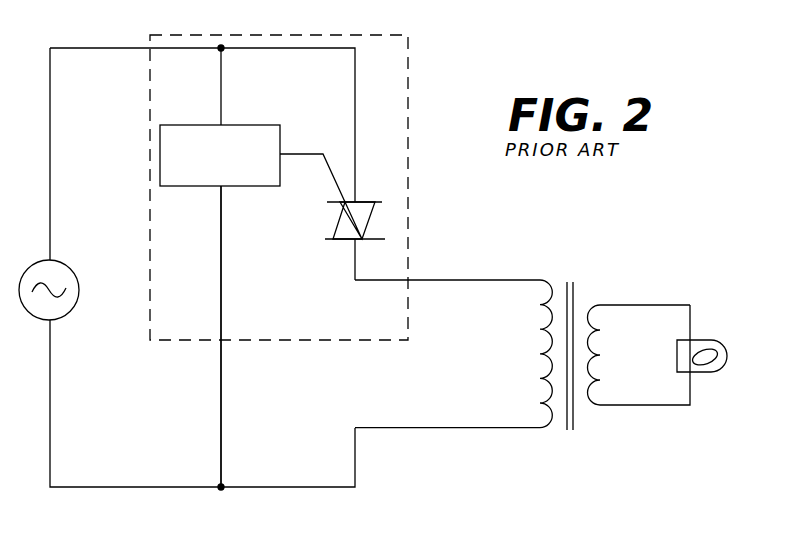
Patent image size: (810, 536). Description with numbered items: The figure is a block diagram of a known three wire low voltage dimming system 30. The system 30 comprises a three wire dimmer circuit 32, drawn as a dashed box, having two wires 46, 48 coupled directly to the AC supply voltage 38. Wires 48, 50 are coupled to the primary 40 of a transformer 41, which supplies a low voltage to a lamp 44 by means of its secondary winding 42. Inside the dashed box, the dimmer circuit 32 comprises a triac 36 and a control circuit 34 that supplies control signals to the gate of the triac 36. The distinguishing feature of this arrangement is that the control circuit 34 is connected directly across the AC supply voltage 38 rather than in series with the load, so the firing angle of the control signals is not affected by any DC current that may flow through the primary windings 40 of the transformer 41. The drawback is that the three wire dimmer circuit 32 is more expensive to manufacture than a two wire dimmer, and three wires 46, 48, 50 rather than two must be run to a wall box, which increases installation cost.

The three wire low voltage dimming system 30 is at (522, 343).
The three wire dimmer circuit 32 is at (398, 118).
The control circuit 34 is at (160, 157).
The triac 36 is at (378, 215).
The AC supply voltage 38 is at (79, 296).
The primary 40 is at (533, 283).
The transformer 41 is at (572, 437).
The secondary winding 42 is at (593, 305).
The lamp 44 is at (712, 345).
The wire 46 is at (118, 48).
The wire 48 is at (221, 438).
The wire 50 is at (492, 283).